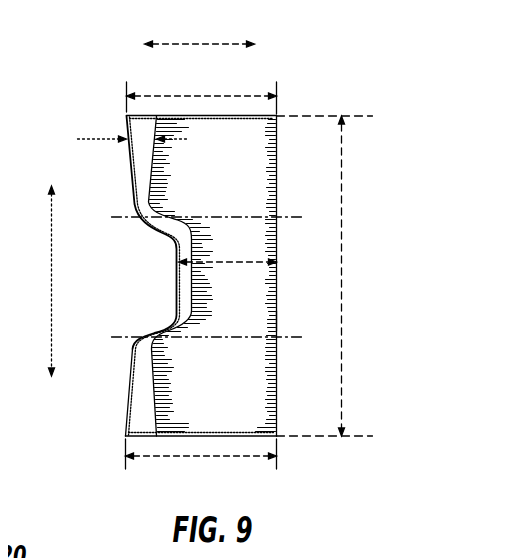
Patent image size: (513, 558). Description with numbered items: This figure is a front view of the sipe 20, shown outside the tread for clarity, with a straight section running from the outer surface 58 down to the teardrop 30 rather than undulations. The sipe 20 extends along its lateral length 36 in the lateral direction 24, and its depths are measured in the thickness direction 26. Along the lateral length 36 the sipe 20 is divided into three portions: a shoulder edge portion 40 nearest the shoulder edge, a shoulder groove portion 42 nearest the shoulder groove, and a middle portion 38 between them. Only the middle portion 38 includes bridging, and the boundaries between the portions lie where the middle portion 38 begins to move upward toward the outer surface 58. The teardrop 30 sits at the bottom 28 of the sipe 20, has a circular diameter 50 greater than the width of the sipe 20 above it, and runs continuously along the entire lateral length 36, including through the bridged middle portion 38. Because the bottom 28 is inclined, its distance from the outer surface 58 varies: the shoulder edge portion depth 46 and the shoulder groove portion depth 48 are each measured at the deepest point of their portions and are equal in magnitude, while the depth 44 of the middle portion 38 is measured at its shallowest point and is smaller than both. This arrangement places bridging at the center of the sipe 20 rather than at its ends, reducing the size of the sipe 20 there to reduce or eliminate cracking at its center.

The sipe 20 is at (211, 241).
The lateral direction 24 is at (52, 272).
The thickness direction 26 is at (182, 43).
The bottom 28 is at (177, 272).
The teardrop 30 is at (130, 427).
The lateral length 36 is at (343, 317).
The middle portion 38 is at (275, 277).
The shoulder edge portion 40 is at (257, 400).
The shoulder groove portion 42 is at (272, 162).
The depth 44 is at (218, 264).
The shoulder edge portion depth 46 is at (223, 458).
The shoulder groove portion depth 48 is at (227, 97).
The diameter 50 is at (102, 139).
The outer surface 58 is at (282, 320).